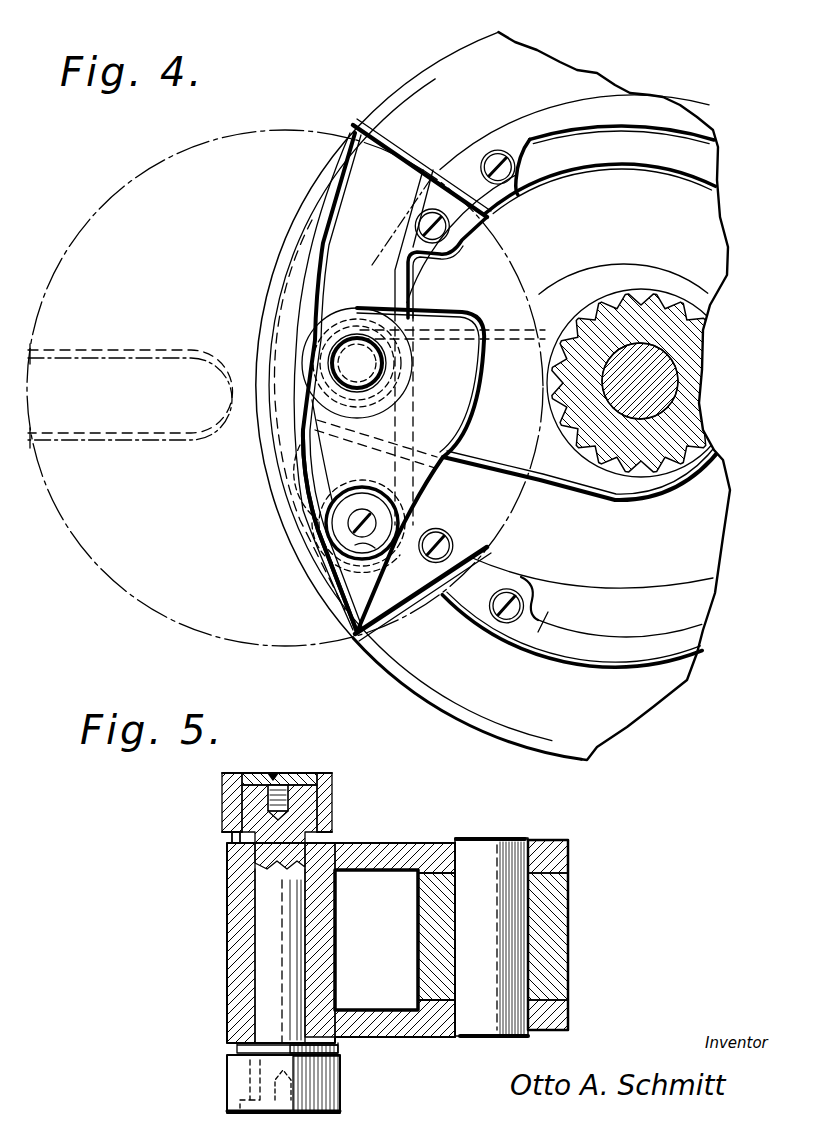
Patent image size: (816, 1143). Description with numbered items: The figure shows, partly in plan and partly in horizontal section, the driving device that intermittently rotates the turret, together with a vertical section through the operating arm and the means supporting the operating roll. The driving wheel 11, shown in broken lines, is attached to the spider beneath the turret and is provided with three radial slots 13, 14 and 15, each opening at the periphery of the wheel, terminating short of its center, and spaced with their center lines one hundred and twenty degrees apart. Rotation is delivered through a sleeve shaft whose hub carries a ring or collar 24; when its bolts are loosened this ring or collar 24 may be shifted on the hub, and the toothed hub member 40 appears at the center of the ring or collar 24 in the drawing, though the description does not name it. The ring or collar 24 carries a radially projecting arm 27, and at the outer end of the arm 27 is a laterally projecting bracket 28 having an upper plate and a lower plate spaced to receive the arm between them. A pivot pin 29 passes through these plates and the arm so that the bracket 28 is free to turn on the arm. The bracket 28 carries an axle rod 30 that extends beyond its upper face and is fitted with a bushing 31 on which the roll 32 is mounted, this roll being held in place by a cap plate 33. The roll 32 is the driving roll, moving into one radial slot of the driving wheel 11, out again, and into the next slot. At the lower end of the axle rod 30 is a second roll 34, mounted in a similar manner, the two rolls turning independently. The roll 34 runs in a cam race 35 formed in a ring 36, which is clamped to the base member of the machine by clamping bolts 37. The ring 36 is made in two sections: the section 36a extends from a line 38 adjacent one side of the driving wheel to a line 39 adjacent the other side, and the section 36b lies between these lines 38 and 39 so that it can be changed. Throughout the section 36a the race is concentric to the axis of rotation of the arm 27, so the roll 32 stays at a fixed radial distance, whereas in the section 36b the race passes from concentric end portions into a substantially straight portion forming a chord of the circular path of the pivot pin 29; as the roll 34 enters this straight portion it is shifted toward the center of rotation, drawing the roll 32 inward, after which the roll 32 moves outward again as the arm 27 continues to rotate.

In FIG. 4, the driving wheel 11 is at (285, 388).
In FIG. 4, the radial slot 13 is at (320, 190).
In FIG. 4, the radial slot 14 is at (320, 597).
In FIG. 4, the radial slot 15 is at (130, 396).
In FIG. 4, the ring or collar 24 is at (627, 272).
In FIG. 4, the radially projecting arm 27 is at (513, 333).
In FIG. 5, the radially projecting arm 27 is at (555, 905).
In FIG. 4, the laterally projecting bracket 28 is at (398, 470).
In FIG. 5, the laterally projecting bracket 28 is at (390, 852).
In FIG. 4, the pivot pin 29 is at (352, 367).
In FIG. 5, the pivot pin 29 is at (495, 845).
In FIG. 5, the axle rod 30 is at (330, 830).
In FIG. 5, the bushing 31 is at (320, 795).
In FIG. 4, the roll 32 is at (340, 556).
In FIG. 5, the roll 32 is at (240, 812).
In FIG. 4, the cap plate 33 is at (348, 523).
In FIG. 5, the cap plate 33 is at (298, 778).
In FIG. 5, the roll 34 is at (322, 1080).
In FIG. 4, the cam race 35 is at (493, 396).
In FIG. 4, the ring 36 is at (552, 748).
In FIG. 4, the ring section 36a is at (561, 650).
In FIG. 4, the ring section 36b is at (433, 270).
In FIG. 4, the clamping bolts 37 is at (518, 592).
In FIG. 4, the line 38 is at (423, 596).
In FIG. 4, the line 39 is at (410, 156).
In FIG. 4, the gear 40 is at (700, 340).